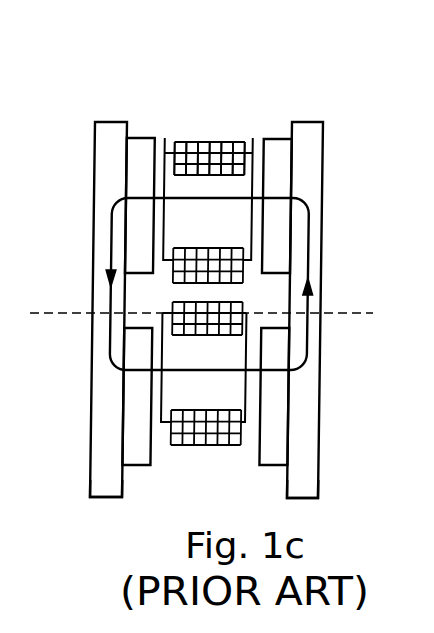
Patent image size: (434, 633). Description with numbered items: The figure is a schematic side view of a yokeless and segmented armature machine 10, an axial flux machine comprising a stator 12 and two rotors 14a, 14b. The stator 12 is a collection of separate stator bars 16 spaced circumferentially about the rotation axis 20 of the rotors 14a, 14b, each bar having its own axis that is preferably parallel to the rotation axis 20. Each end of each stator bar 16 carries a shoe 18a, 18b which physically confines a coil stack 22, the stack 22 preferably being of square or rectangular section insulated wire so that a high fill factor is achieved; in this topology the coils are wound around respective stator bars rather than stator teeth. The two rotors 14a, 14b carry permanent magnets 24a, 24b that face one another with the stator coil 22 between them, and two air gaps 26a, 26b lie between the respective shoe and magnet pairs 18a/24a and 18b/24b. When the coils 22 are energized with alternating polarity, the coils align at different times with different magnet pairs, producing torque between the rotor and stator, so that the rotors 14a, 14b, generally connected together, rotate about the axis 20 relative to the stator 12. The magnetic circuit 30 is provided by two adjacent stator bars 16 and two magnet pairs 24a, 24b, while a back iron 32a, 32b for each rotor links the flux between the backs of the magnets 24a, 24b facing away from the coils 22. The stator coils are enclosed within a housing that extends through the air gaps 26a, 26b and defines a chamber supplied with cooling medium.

The yokeless and segmented armature machine 10 is at (252, 27).
The stator 12 is at (191, 472).
The rotor 14a is at (100, 497).
The rotor 14b is at (303, 498).
The stator bar 16 is at (207, 185).
The shoe 18a is at (163, 147).
The shoe 18b is at (253, 150).
The rotation axis 20 is at (55, 312).
The coil stack 22 is at (186, 140).
The permanent magnet 24a is at (140, 242).
The permanent magnet 24b is at (274, 252).
The air gap 26a is at (163, 160).
The air gap 26b is at (272, 160).
The magnetic circuit 30 is at (307, 335).
The back iron 32a is at (100, 456).
The back iron 32b is at (305, 450).